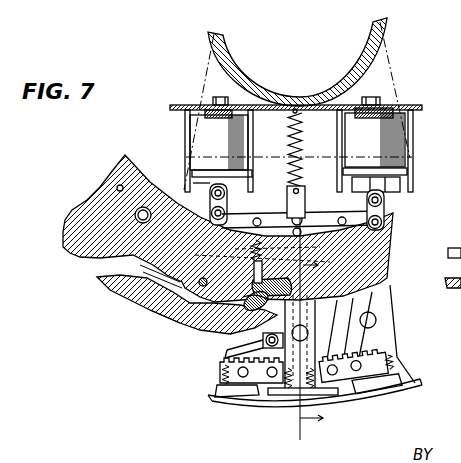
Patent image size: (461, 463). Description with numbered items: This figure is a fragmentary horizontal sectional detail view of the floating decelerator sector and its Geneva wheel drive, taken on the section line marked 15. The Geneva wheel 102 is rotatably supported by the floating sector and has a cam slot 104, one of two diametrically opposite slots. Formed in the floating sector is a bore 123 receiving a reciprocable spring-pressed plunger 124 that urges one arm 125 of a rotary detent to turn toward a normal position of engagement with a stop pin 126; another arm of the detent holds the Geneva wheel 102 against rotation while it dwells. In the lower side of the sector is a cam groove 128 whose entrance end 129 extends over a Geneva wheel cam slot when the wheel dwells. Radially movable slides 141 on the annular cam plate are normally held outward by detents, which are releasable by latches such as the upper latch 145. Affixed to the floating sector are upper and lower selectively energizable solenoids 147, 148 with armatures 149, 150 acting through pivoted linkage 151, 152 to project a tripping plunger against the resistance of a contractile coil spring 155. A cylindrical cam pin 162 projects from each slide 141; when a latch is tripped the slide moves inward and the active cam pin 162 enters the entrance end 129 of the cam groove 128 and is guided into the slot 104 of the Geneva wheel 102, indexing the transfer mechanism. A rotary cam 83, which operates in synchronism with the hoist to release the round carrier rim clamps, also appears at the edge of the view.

The section line 15- 15 is at (296, 331).
The rotary cam 83 is at (450, 249).
The Geneva wheel 102 is at (180, 323).
The cam slot 104 is at (172, 283).
The bore 123 is at (252, 244).
The spring-pressed plunger 124 is at (251, 270).
The arm of rotary detent 125 is at (317, 283).
The stop pin 126 is at (323, 262).
The cam groove 128 is at (97, 278).
The entrance end of cam groove 129 is at (311, 307).
The slide 141 is at (373, 340).
The upper latch 145 is at (230, 351).
The upper solenoid 147 is at (375, 137).
The lower solenoid 148 is at (207, 138).
The armature 149 is at (381, 189).
The armature 150 is at (197, 182).
The pivoted linkage 151 is at (353, 222).
The pivoted linkage 152 is at (272, 223).
The contractile coil spring 155 is at (296, 118).
The cam pin 162 is at (389, 299).